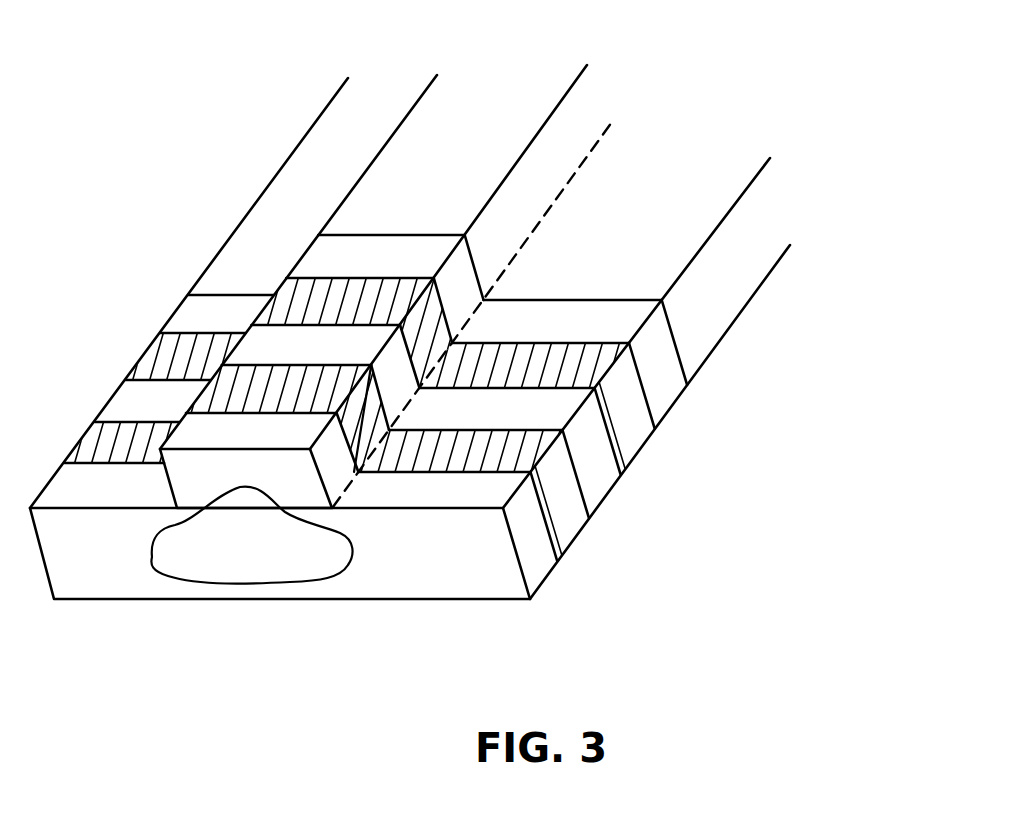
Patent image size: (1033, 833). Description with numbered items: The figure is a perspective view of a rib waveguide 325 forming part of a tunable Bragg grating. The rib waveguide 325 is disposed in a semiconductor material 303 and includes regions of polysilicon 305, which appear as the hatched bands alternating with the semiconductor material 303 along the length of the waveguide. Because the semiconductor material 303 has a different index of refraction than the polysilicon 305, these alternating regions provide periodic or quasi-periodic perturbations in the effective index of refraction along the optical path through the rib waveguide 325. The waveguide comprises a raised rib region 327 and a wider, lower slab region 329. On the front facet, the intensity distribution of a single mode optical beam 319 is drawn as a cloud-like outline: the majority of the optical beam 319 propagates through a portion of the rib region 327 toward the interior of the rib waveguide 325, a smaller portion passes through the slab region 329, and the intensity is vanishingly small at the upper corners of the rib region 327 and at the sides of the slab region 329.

The semiconductor material 303 is at (680, 396).
The polysilicon 305 is at (648, 442).
The optical beam 319 is at (283, 582).
The rib waveguide 325 is at (796, 23).
The rib region 327 is at (303, 481).
The slab region 329 is at (462, 588).